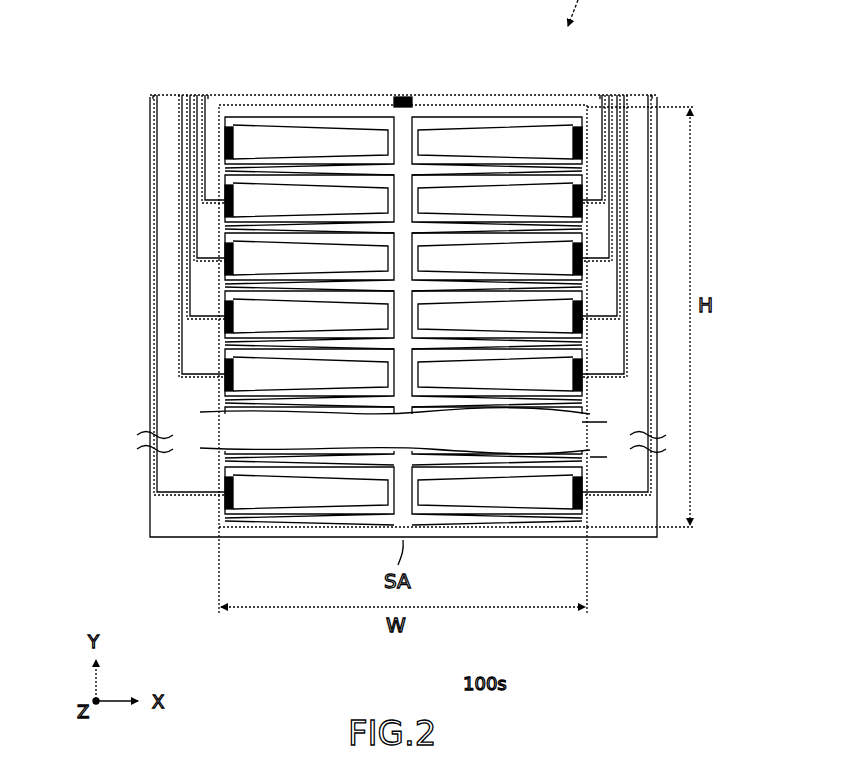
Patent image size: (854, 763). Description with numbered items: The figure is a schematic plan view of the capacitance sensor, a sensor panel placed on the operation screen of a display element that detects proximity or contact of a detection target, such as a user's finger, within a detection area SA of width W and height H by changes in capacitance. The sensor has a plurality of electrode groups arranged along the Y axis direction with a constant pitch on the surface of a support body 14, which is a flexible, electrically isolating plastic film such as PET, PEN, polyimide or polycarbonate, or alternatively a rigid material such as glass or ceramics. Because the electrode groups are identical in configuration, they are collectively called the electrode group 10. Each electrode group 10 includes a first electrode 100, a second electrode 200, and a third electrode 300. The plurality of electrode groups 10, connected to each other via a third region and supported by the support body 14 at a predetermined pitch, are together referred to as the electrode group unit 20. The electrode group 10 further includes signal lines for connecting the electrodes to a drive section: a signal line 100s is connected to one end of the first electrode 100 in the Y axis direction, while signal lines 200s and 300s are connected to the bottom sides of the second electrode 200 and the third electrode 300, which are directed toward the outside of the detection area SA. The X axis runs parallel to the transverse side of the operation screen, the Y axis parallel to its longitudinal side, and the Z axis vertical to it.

The electrode group 10 is at (390, 57).
The support body 14 is at (185, 540).
The electrode group unit 20 is at (97, 138).
The first electrode 100 is at (322, 107).
The signal line 100s is at (404, 96).
The second electrode 200 is at (263, 143).
The signal line 200s is at (205, 95).
The third electrode 300 is at (427, 147).
The signal line 300s is at (648, 95).